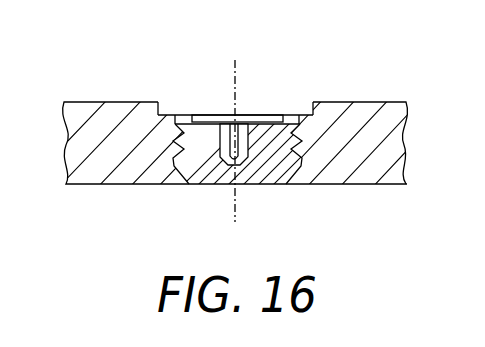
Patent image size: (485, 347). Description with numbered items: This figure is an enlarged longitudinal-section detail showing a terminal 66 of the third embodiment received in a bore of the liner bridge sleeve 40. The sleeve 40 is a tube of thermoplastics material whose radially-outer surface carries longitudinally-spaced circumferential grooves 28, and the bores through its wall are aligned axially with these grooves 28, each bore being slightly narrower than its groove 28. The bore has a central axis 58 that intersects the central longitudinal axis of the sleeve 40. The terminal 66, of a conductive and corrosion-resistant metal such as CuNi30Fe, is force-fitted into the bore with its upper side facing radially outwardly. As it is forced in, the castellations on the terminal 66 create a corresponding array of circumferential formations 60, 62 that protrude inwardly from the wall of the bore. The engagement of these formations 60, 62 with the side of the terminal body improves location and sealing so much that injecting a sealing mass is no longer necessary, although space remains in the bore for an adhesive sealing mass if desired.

The sleeve 40 is at (364, 63).
The circumferential groove 28 is at (298, 116).
The terminal 66 is at (210, 132).
The circumferential formation 60 is at (183, 173).
The circumferential formation 62 is at (178, 150).
The central axis 58 is at (235, 215).